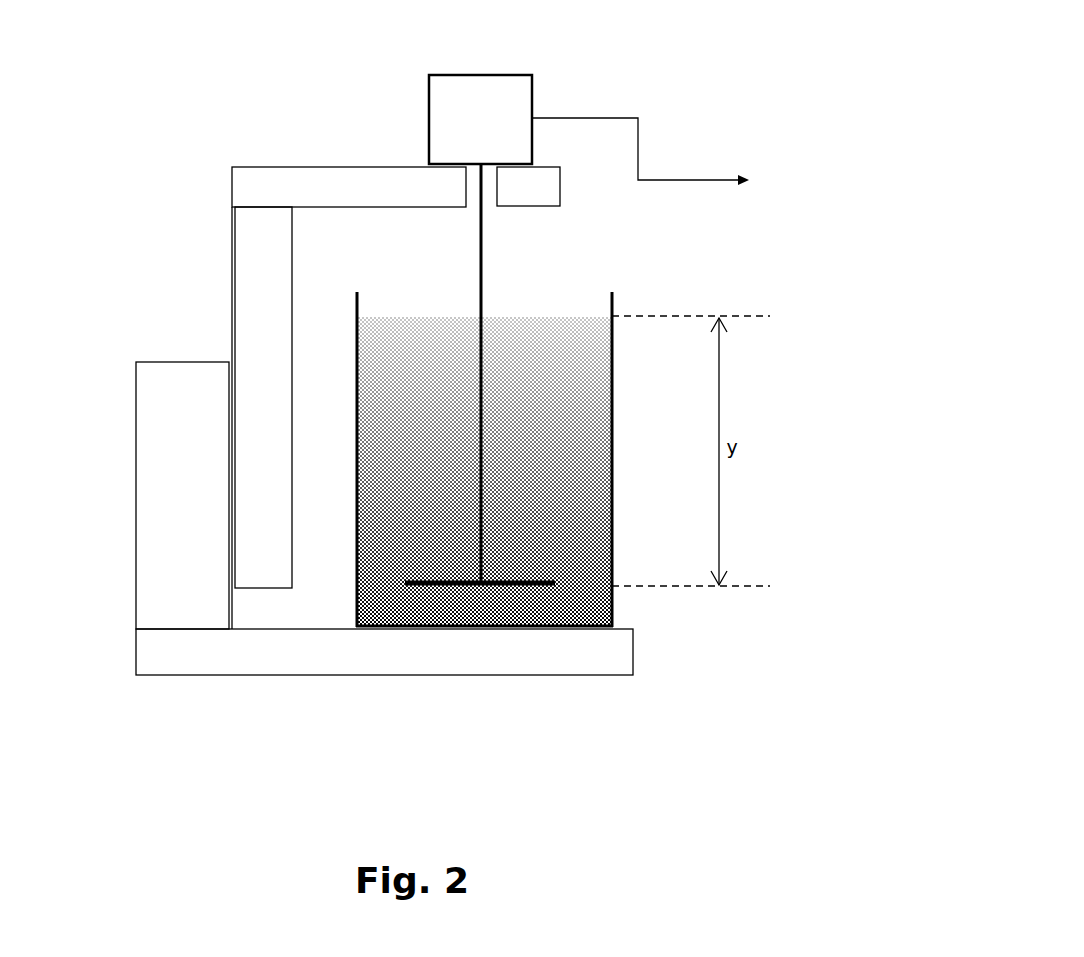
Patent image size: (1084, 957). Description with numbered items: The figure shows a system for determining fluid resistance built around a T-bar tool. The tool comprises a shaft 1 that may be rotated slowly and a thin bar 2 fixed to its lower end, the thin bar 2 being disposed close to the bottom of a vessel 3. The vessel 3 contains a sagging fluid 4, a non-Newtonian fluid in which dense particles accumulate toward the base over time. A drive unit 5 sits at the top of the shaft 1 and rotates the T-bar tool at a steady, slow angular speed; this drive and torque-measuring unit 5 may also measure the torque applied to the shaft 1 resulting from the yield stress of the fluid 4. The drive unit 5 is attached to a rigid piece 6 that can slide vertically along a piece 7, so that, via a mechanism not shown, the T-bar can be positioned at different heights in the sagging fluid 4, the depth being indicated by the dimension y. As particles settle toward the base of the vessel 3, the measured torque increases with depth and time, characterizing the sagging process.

The shaft 1 is at (477, 257).
The thin bar 2 is at (505, 586).
The vessel 3 is at (357, 471).
The sagging fluid 4 is at (430, 388).
The drive unit 5 is at (429, 121).
The rigid piece 6 is at (232, 267).
The piece 7 is at (137, 493).